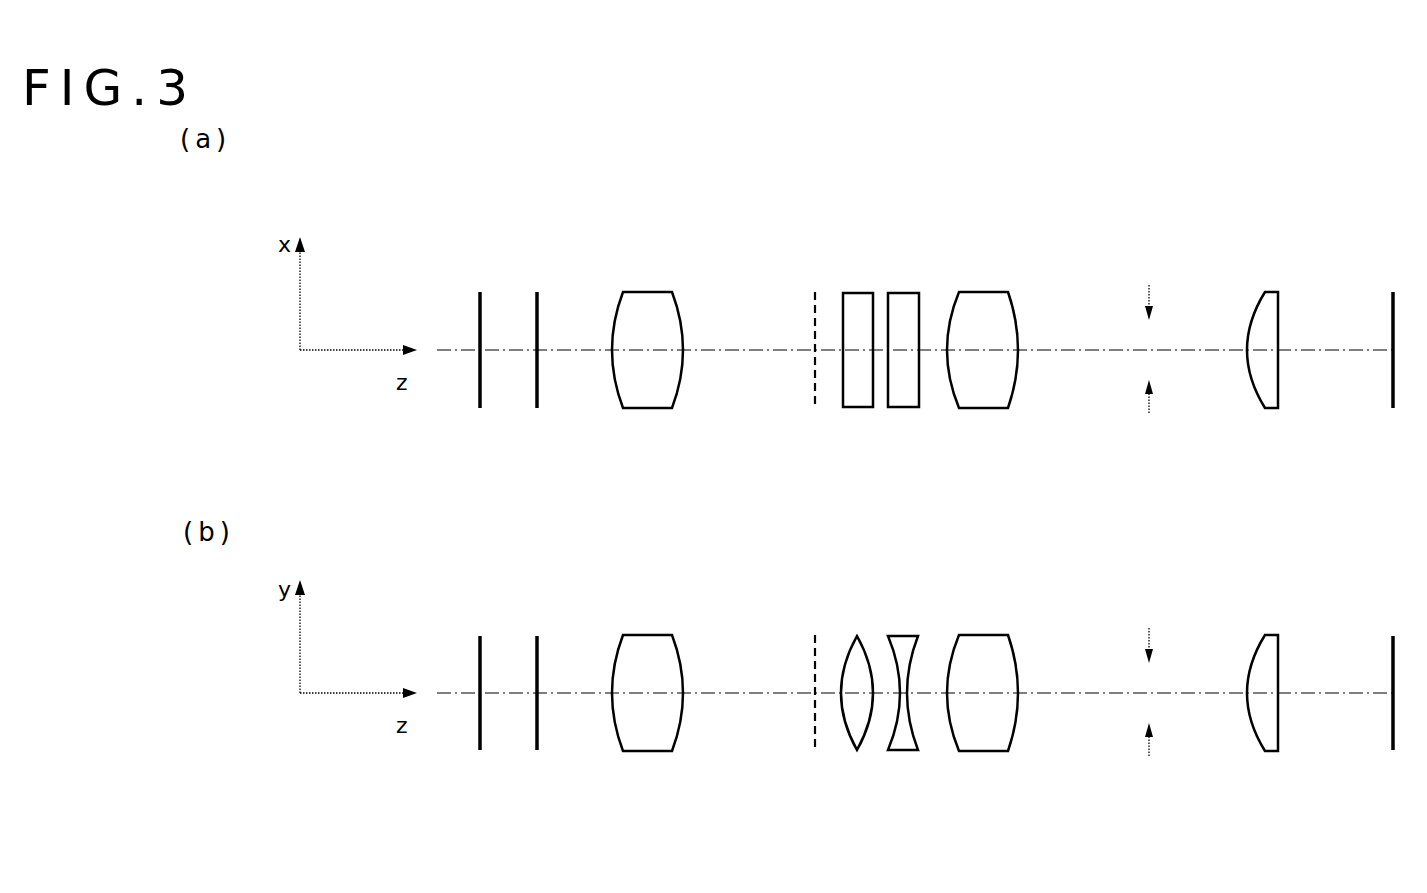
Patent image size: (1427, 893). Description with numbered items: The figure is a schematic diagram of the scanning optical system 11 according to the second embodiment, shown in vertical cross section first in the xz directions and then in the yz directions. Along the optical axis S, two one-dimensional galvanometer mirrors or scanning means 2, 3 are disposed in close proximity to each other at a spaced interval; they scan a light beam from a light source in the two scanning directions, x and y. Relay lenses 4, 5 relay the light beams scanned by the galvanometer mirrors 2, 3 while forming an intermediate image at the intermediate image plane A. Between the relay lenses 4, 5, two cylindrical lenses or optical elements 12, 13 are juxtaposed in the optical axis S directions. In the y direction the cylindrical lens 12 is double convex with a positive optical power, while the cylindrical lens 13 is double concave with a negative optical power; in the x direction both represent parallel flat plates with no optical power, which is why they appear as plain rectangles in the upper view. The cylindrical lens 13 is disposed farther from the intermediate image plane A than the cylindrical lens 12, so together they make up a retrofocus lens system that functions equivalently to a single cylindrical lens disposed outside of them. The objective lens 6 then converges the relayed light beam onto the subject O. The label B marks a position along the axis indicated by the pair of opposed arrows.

The one-dimensional galvanometer mirror 2 is at (480, 318).
The one-dimensional galvanometer mirror 3 is at (537, 318).
The optical axis S is at (566, 350).
The relay lens 4 is at (654, 292).
The intermediate image plane A is at (808, 292).
The cylindrical lens 12 is at (856, 292).
The cylindrical lens 13 is at (901, 292).
The relay lens 5 is at (982, 292).
The scanning optical system 11 is at (1034, 201).
The beam position B is at (1136, 292).
The objective lens 6 is at (1270, 292).
The subject O is at (1392, 318).